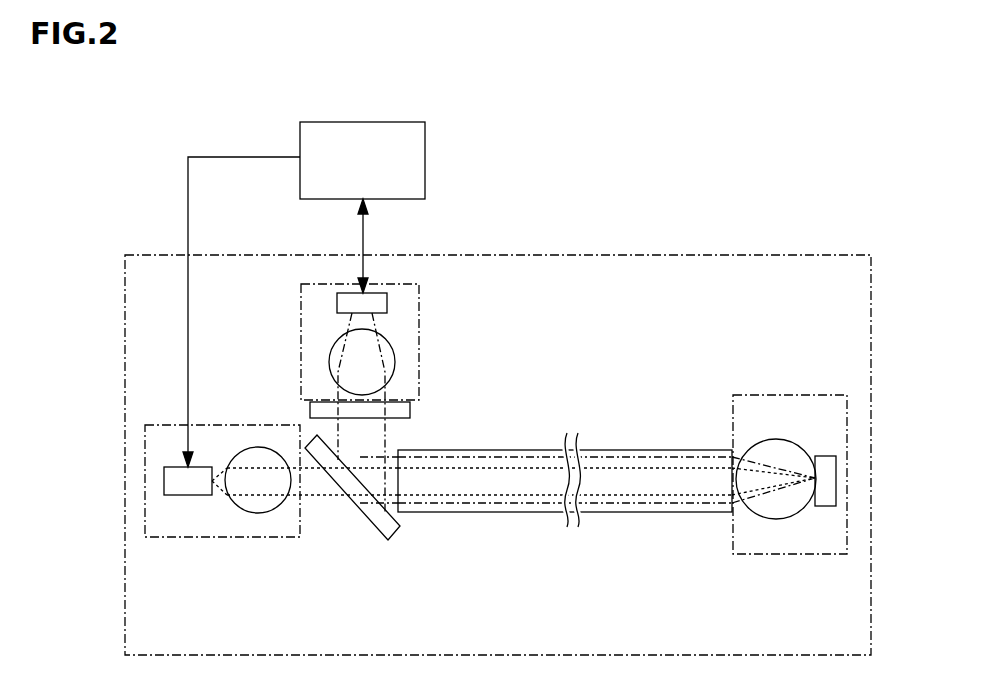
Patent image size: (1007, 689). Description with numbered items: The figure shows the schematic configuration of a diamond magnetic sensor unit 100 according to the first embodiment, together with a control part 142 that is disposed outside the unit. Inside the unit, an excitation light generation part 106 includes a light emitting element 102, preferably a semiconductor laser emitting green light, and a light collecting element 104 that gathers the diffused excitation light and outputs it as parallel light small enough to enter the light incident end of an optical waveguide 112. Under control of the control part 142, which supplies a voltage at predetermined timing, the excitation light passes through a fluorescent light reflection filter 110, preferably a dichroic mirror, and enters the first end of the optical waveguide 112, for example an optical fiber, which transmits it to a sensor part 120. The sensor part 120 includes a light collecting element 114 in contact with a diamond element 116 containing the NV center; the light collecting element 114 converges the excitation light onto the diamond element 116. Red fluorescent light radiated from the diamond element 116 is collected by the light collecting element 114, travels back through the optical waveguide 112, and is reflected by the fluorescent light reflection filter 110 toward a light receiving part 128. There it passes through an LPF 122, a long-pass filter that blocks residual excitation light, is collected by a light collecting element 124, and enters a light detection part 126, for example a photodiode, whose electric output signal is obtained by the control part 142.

The diamond magnetic sensor unit 100 is at (685, 255).
The light emitting element 102 is at (170, 462).
The light collecting element 104 is at (262, 445).
The excitation light generation part 106 is at (215, 537).
The fluorescent light reflection filter 110 is at (360, 520).
The optical waveguide 112 is at (498, 512).
The light collecting element 114 is at (778, 522).
The diamond element 116 is at (828, 507).
The sensor part 120 is at (777, 395).
The LPF 122 is at (410, 412).
The light collecting element 124 is at (395, 362).
The light detection part 126 is at (388, 303).
The light receiving part 128 is at (301, 340).
The control part 142 is at (365, 122).